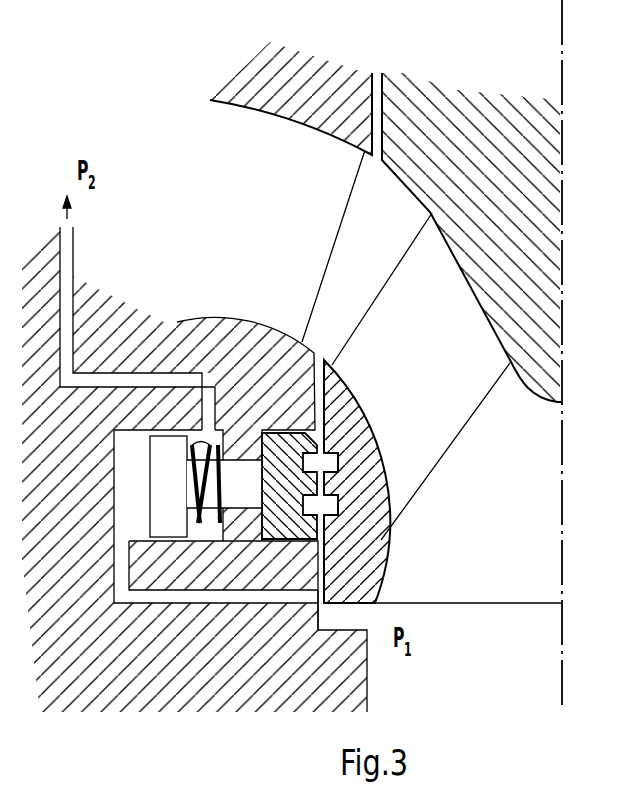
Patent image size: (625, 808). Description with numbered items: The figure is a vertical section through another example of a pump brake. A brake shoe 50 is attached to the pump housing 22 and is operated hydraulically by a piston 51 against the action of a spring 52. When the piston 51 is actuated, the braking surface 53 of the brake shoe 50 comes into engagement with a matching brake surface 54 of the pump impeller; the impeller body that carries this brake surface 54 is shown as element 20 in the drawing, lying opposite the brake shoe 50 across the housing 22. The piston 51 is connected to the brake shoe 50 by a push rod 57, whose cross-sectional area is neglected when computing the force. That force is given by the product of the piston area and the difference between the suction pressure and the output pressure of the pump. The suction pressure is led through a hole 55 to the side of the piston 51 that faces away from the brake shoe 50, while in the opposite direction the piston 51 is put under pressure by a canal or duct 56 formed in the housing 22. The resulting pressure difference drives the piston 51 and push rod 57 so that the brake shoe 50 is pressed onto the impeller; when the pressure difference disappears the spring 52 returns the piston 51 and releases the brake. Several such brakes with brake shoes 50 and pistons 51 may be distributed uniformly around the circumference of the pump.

The rotor 20 is at (462, 216).
The pump housing 22 is at (188, 662).
The brake shoe 50 is at (327, 428).
The piston 51 is at (163, 497).
The spring 52 is at (190, 450).
The braking surface 53 is at (318, 440).
The brake surface 54 is at (325, 507).
The hole 55 is at (300, 596).
The canal or duct 56 is at (72, 265).
The push rod 57 is at (246, 472).